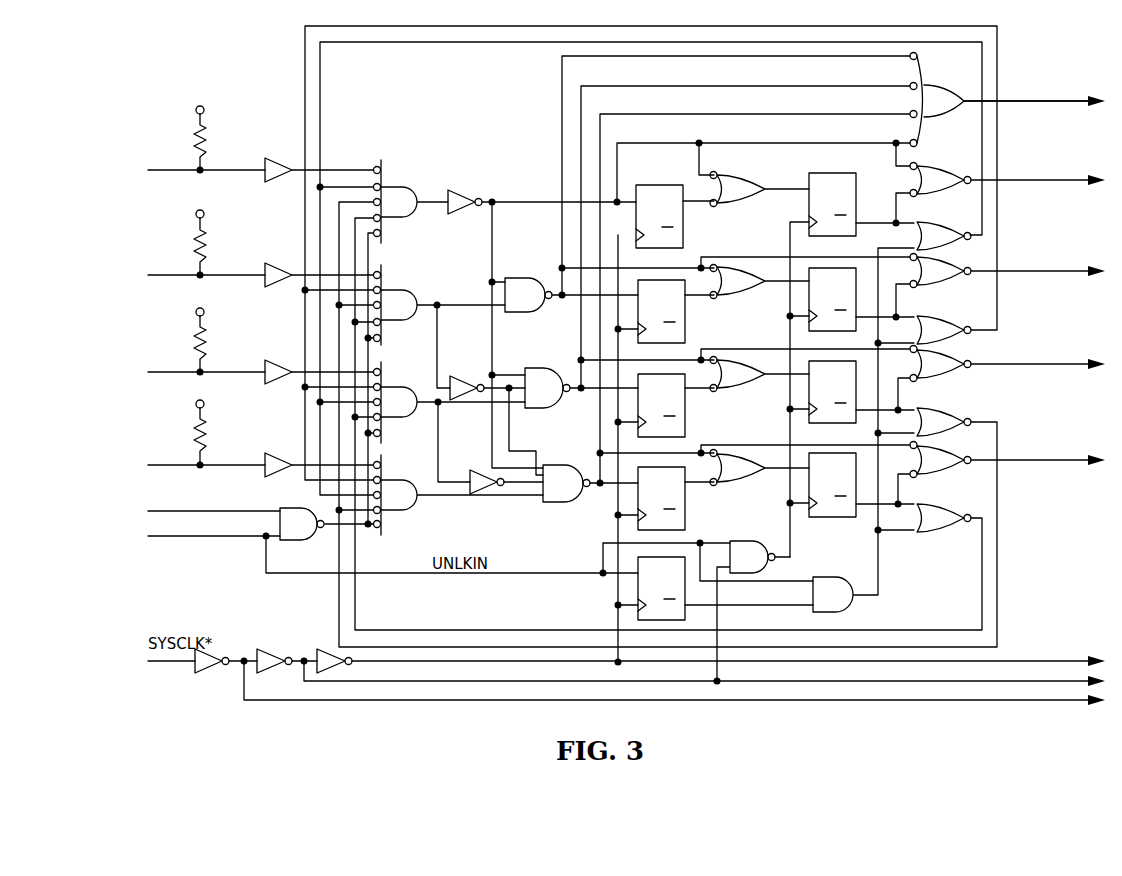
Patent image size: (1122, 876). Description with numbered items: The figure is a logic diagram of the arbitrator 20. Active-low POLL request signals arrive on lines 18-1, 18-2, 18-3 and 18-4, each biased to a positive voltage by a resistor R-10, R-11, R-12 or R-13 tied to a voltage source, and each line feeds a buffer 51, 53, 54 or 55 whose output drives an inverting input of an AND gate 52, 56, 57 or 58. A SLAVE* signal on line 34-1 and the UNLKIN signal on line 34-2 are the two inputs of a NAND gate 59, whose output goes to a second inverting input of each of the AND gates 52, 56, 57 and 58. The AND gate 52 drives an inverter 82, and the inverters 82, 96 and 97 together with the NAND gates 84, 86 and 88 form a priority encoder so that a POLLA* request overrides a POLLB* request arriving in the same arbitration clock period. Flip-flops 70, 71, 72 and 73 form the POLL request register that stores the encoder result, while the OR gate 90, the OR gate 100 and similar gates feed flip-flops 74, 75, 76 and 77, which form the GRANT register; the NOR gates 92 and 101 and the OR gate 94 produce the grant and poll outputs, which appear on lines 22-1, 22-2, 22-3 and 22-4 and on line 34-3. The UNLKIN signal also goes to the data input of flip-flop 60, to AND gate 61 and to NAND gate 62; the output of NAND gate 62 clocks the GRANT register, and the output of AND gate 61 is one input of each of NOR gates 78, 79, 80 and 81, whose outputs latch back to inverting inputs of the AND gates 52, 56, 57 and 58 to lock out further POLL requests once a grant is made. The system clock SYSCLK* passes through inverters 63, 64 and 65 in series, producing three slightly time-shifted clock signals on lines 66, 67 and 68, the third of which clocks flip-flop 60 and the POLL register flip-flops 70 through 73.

The arbitrator 20 is at (272, 61).
The line 18-1 is at (180, 170).
The POLL signal line 18-2 is at (180, 275).
The POLL signal line 18-3 is at (180, 372).
The POLL signal line 18-4 is at (180, 465).
The resistor R-10 is at (221, 138).
The resistor R-11 is at (221, 242).
The resistor R-12 is at (221, 340).
The resistor R-13 is at (221, 432).
The buffer 51 is at (268, 183).
The AND gate 52 is at (414, 201).
The buffer 53 is at (268, 288).
The buffer 54 is at (268, 385).
The buffer 55 is at (268, 478).
The AND gate 56 is at (443, 305).
The AND gate 57 is at (453, 402).
The AND gate 58 is at (462, 495).
The NAND gate 59 is at (302, 524).
The line 34-1 is at (184, 511).
The line 34-2 is at (210, 540).
The ANY POLL output line 34-3 is at (1043, 125).
The GRANT A* output line 22-1 is at (1043, 204).
The GRANT B* output line 22-2 is at (1043, 295).
The GRANT C* output line 22-3 is at (1043, 388).
The GRANT D* output line 22-4 is at (1043, 484).
The inverter 82 is at (452, 188).
The NAND gate 84 is at (571, 295).
The NAND gate 86 is at (581, 388).
The NAND gate 88 is at (590, 483).
The inverter 96 is at (455, 374).
The inverter 97 is at (476, 468).
The OR gate 90 is at (759, 189).
The OR gate 100 is at (759, 282).
The flip-flop 70 is at (640, 183).
The flip-flop 71 is at (685, 318).
The flip-flop 72 is at (685, 411).
The flip-flop 73 is at (685, 504).
The flip-flop 74 is at (812, 171).
The flip-flop 75 is at (808, 293).
The flip-flop 76 is at (808, 387).
The flip-flop 77 is at (808, 481).
The NOR gate 78 is at (944, 236).
The NOR gate 79 is at (944, 330).
The NOR gate 80 is at (944, 422).
The NOR gate 81 is at (944, 518).
The NOR gate 92 is at (940, 180).
The OR gate 94 is at (1007, 100).
The NOR gate 101 is at (940, 271).
The flip-flop 60 is at (636, 580).
The AND gate 61 is at (863, 430).
The NAND gate 62 is at (752, 613).
The inverter 63 is at (200, 672).
The inverter 64 is at (245, 660).
The inverter 65 is at (305, 660).
The line 66 is at (985, 699).
The line 67 is at (985, 680).
The line 68 is at (985, 660).